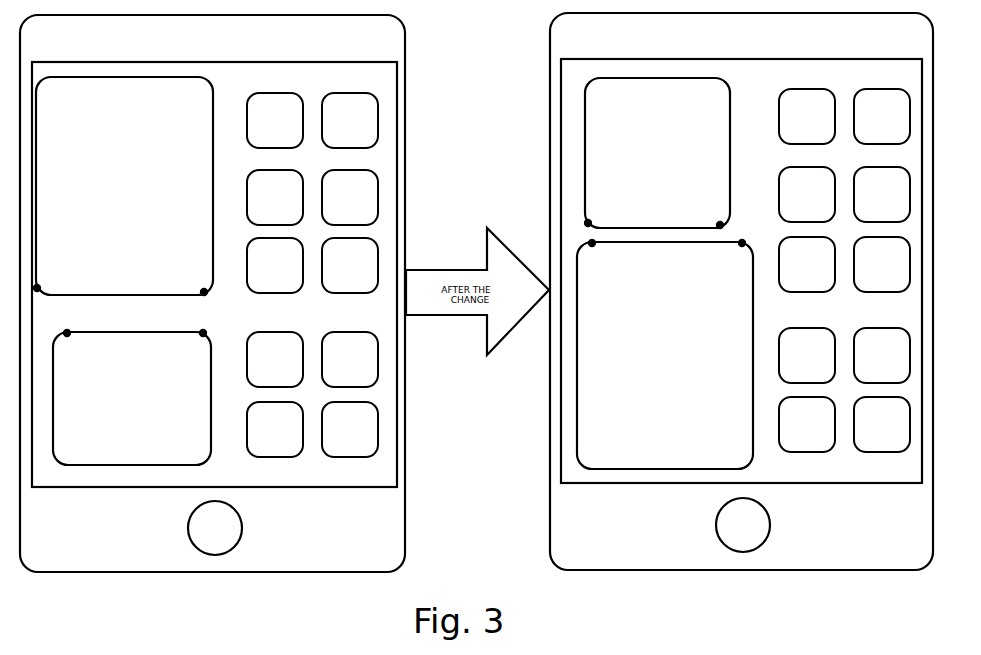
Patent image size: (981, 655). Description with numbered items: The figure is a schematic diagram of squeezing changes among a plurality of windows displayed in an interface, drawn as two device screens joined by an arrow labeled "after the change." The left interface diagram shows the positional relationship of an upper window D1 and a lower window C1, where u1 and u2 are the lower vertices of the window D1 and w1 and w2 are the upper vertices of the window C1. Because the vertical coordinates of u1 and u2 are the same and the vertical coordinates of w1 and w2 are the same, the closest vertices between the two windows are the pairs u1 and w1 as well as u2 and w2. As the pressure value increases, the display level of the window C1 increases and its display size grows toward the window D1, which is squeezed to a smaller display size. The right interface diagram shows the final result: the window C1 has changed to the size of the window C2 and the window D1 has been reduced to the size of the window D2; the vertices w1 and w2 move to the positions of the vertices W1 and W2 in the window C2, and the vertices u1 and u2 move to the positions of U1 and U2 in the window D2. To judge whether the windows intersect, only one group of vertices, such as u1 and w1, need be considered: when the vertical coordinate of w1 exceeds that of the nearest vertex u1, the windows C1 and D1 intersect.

The window D1 is at (124, 186).
The window C1 is at (132, 398).
The vertex u1 is at (37, 288).
The vertex u2 is at (204, 292).
The vertex w1 is at (67, 333).
The vertex w2 is at (203, 333).
The window D2 is at (657, 153).
The window C2 is at (665, 355).
The vertex U1 is at (588, 223).
The vertex U2 is at (720, 225).
The vertex W1 is at (592, 243).
The vertex W2 is at (742, 243).